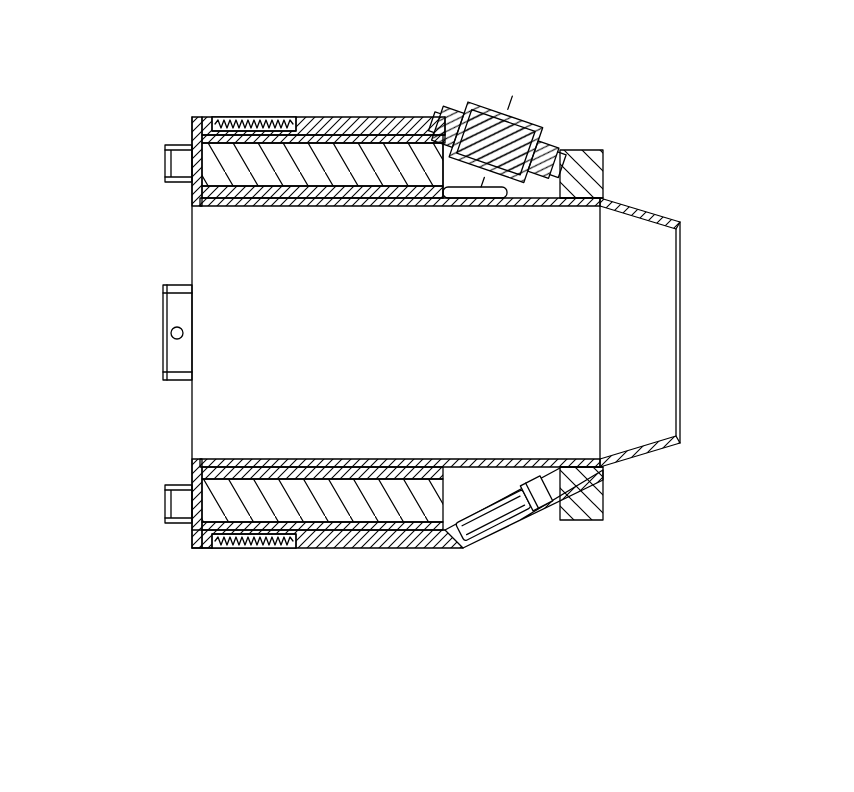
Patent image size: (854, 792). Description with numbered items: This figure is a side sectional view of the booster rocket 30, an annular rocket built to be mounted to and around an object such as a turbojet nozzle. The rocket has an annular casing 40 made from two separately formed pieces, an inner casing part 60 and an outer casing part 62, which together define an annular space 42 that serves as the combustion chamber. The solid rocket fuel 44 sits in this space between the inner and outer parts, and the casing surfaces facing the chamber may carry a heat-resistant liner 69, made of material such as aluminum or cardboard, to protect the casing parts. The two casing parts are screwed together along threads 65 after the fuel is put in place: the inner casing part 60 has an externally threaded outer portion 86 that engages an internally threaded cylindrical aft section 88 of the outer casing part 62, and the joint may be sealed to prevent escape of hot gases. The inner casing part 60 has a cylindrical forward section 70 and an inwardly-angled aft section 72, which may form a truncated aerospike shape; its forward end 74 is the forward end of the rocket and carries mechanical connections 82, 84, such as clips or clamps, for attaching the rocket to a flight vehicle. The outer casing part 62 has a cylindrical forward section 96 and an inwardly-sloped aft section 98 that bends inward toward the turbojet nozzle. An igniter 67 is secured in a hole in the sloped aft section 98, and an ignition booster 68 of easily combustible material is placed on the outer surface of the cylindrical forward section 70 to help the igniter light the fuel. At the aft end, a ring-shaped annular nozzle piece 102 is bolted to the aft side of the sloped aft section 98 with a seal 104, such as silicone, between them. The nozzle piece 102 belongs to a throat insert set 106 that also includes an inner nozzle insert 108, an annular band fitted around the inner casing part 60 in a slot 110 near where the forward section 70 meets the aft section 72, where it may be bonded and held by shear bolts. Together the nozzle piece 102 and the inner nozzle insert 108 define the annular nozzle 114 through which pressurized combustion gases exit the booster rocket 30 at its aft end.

The booster rocket 30 is at (240, 88).
The annular casing 40 is at (316, 100).
The annular space 42 is at (448, 128).
The solid rocket fuel 44 is at (388, 158).
The inner casing part 60 is at (204, 207).
The outer casing part 62 is at (356, 117).
The threads 65 is at (262, 117).
The igniter 67 is at (516, 125).
The ignition booster 68 is at (495, 197).
The liner 69 is at (208, 117).
The cylindrical forward section 70 is at (533, 495).
The inwardly-angled aft section 72 is at (652, 452).
The forward end 74 is at (130, 553).
The mechanical connection 82 is at (165, 158).
The mechanical connection 84 is at (165, 500).
The externally threaded outer portion 86 is at (205, 546).
The internally threaded cylindrical aft section 88 is at (250, 545).
The cylindrical forward section 96 is at (368, 548).
The inwardly-sloped aft section 98 is at (553, 505).
The annular nozzle piece 102 is at (603, 160).
The seal 104 is at (648, 173).
The throat insert set 106 is at (622, 505).
The inner nozzle insert 108 is at (600, 192).
The slot 110 is at (596, 462).
The annular nozzle 114 is at (624, 484).